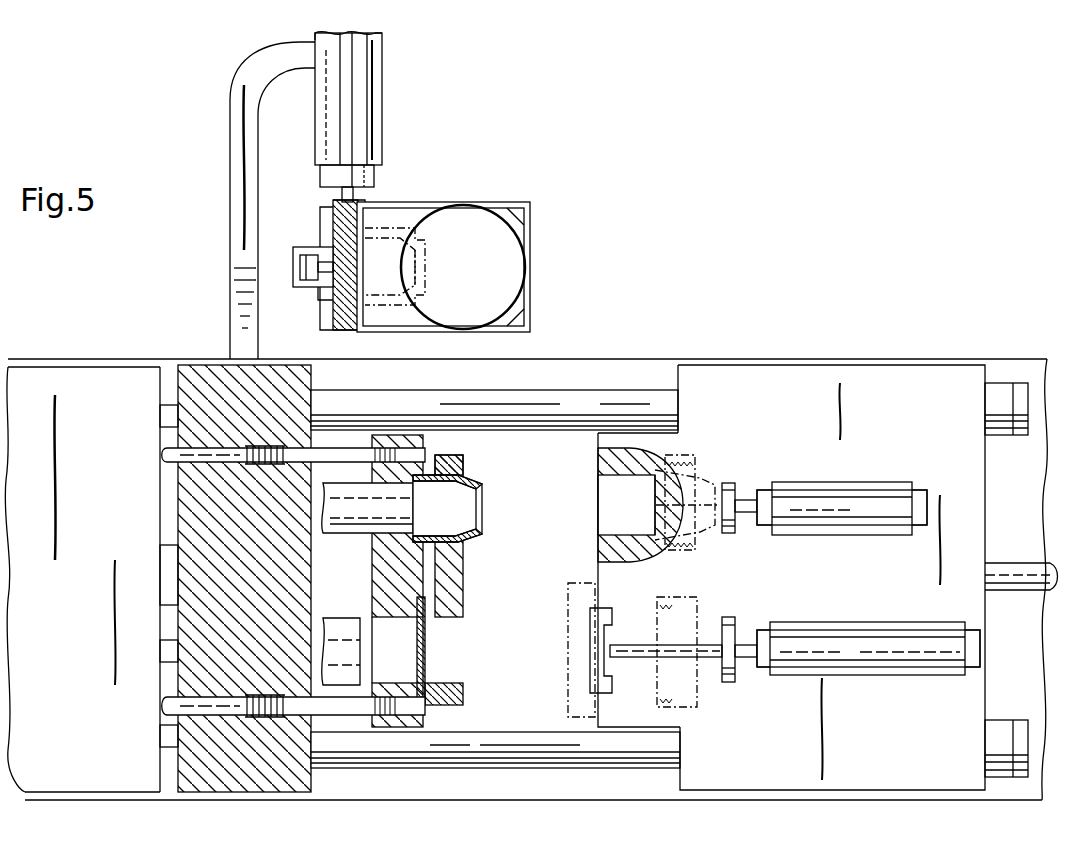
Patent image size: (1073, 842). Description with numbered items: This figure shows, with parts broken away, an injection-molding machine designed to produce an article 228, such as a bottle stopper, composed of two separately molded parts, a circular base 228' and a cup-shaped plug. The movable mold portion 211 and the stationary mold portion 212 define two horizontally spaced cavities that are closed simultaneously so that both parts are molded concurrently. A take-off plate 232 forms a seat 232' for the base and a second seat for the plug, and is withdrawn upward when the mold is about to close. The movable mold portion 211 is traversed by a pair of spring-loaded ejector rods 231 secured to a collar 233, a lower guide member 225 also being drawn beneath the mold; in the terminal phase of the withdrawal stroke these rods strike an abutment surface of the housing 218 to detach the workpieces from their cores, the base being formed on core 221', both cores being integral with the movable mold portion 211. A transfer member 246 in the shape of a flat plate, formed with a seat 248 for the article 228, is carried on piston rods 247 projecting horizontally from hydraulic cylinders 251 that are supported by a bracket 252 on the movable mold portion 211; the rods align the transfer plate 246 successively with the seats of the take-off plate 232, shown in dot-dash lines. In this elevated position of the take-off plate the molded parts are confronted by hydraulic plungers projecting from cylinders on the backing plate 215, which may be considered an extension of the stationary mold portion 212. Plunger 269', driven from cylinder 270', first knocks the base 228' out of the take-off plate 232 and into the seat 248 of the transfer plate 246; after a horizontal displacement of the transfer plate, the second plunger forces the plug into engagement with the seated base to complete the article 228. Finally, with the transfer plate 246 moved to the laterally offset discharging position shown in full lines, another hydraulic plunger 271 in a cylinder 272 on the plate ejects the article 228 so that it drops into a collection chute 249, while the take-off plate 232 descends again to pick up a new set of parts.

The hydraulic cylinder 251 is at (383, 55).
The bracket 252 is at (230, 152).
The piston rod 247 is at (342, 195).
The article 228 is at (405, 232).
The collection chute 249 is at (530, 210).
The transfer member 246 is at (333, 225).
The cylinder 272 is at (293, 262).
The hydraulic plunger 271 is at (322, 300).
The seat 248 is at (700, 708).
The housing 218 is at (64, 365).
The movable mold portion 211 is at (214, 368).
The collar 233 is at (348, 392).
The lower guide bar 225 is at (352, 732).
The take-off plate 232 is at (576, 564).
The seat 232' is at (477, 691).
The base part 228' is at (471, 650).
The ejector rod 231 is at (165, 706).
The core 221' is at (342, 636).
The hydraulic plunger 269' is at (735, 635).
The cylinder 270' is at (868, 671).
The stationary mold portion 212 is at (614, 727).
The backing plate 215 is at (972, 530).